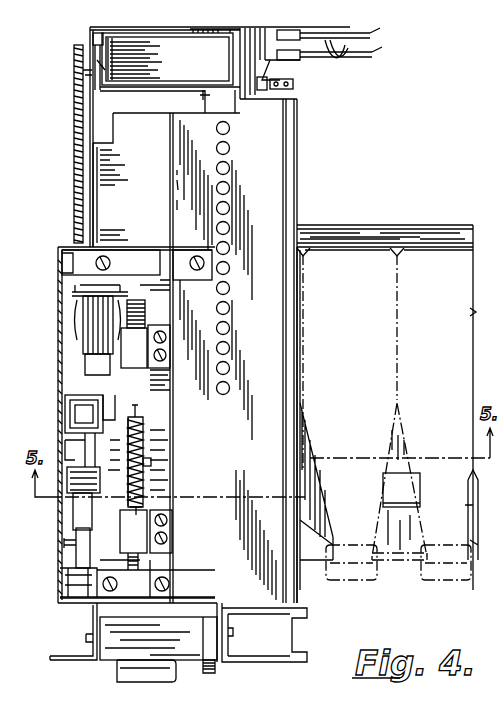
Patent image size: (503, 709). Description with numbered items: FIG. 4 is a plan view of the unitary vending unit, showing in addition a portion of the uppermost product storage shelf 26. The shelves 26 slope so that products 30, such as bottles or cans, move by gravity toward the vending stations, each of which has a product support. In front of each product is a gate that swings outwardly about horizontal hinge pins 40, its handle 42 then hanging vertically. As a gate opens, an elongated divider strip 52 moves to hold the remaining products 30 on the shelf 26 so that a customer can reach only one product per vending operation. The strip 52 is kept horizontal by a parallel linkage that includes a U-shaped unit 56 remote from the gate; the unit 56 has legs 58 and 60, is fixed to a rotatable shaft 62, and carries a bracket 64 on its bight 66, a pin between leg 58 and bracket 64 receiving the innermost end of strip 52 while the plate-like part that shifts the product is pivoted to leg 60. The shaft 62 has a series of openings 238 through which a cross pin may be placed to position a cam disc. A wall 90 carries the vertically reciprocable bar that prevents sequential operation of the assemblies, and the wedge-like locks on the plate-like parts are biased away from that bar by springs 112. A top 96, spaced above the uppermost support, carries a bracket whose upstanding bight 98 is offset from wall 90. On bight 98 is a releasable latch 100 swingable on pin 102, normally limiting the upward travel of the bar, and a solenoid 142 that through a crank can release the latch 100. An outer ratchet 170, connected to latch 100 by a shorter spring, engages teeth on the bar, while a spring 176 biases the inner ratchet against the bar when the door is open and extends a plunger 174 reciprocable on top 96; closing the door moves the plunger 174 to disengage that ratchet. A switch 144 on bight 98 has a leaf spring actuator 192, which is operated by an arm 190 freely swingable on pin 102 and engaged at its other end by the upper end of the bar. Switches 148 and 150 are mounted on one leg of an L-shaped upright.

The shelf 26 is at (400, 435).
The product 30 is at (345, 258).
The horizontal hinge pin 40 is at (86, 638).
The handle 42 is at (188, 675).
The divider strip 52 is at (205, 100).
The unit 56 is at (82, 72).
The leg 58 is at (242, 34).
The leg 60 is at (105, 38).
The rotatable shaft 62 is at (140, 92).
The bracket 64 is at (190, 32).
The bight 66 is at (143, 37).
The wall 90 is at (92, 183).
The top 96 is at (275, 167).
The bight 98 is at (58, 341).
The releasable latch means 100 is at (72, 480).
The pin 102 is at (145, 452).
The spring 112 is at (73, 130).
The solenoid 142 is at (72, 305).
The switch 144 is at (66, 580).
The switch 148 is at (285, 34).
The switch 150 is at (290, 62).
The outer ratchet 170 is at (65, 416).
The plunger 174 is at (140, 560).
The spring 176 is at (151, 468).
The arm 190 is at (110, 498).
The leaf spring actuator 192 is at (76, 555).
The opening 238 is at (293, 88).